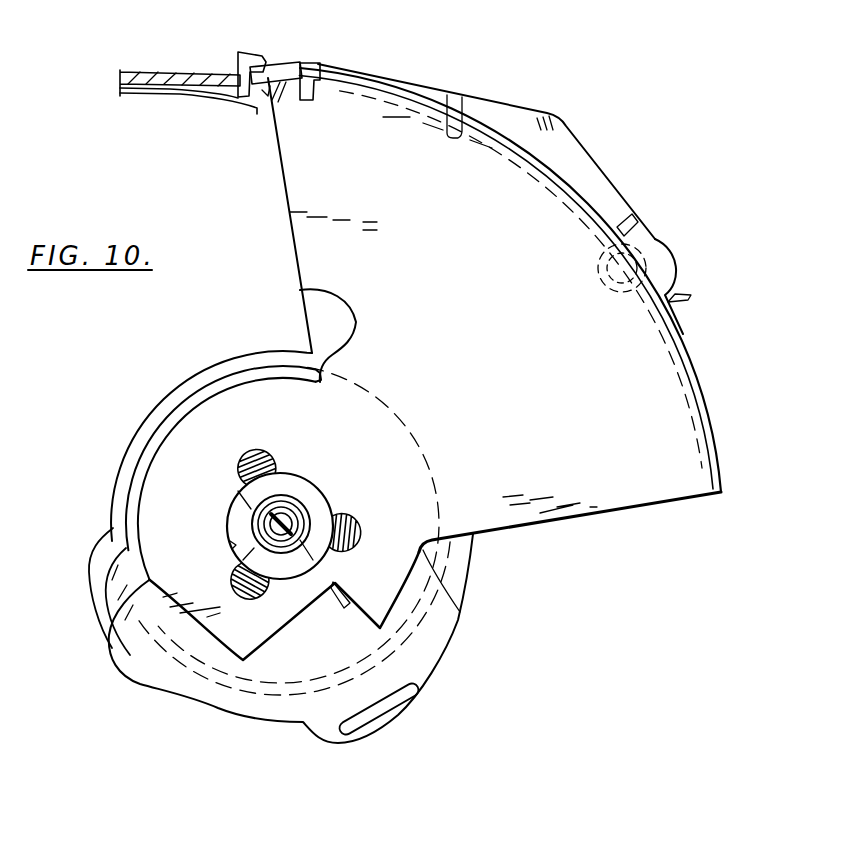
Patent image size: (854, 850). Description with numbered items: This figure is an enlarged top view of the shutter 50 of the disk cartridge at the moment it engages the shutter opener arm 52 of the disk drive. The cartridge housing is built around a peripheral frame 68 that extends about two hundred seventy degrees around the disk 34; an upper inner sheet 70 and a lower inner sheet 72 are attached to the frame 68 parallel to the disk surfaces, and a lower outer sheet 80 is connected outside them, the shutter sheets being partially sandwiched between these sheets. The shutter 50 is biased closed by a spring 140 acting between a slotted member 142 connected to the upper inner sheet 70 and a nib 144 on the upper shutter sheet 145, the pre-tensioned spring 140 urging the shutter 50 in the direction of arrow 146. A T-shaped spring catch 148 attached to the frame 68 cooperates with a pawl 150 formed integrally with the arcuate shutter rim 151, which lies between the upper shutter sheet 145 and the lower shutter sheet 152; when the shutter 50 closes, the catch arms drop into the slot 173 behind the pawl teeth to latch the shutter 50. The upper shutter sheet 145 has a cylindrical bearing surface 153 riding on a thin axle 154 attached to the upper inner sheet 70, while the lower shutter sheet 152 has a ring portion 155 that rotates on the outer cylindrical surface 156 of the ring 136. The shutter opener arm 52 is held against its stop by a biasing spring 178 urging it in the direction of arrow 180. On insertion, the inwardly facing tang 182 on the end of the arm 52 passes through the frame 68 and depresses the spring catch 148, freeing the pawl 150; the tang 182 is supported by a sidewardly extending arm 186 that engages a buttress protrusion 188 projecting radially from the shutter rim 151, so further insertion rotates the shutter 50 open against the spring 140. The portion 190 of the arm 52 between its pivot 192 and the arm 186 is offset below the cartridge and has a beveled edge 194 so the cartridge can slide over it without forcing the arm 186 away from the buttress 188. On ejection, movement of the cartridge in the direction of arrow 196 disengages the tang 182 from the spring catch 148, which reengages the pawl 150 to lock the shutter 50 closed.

The disk 34 is at (120, 604).
The shutter 50 is at (493, 336).
The shutter opener arm 52 is at (600, 158).
The peripheral frame 68 is at (138, 72).
The upper inner sheet 70 is at (440, 670).
The lower inner sheet 72 is at (108, 590).
The lower outer sheet 80 is at (100, 557).
The ring 136 is at (122, 500).
The spring 140 is at (349, 548).
The slotted member 142 is at (302, 512).
The nib 144 is at (342, 607).
The upper shutter sheet 145 is at (676, 488).
The arrow 146 is at (402, 375).
The T-shaped spring catch 148 is at (214, 100).
The pawl 150 is at (262, 66).
The arcuate shutter rim 151 is at (705, 374).
The lower shutter sheet 152 is at (326, 310).
The cylindrical bearing surface 153 is at (230, 545).
The thin axle 154 is at (285, 476).
The ring portion 155 is at (158, 416).
The outer cylindrical surface 156 is at (200, 386).
The slot 173 is at (273, 90).
The biasing spring 178 is at (692, 298).
The arrow 180 is at (682, 238).
The tang 182 is at (248, 60).
The sidewardly extending arm 186 is at (304, 66).
The buttress protrusion 188 is at (292, 98).
The portion of the arm 190 is at (562, 128).
The pivot 192 is at (650, 232).
The edge 194 is at (450, 102).
The arrow 196 is at (530, 555).